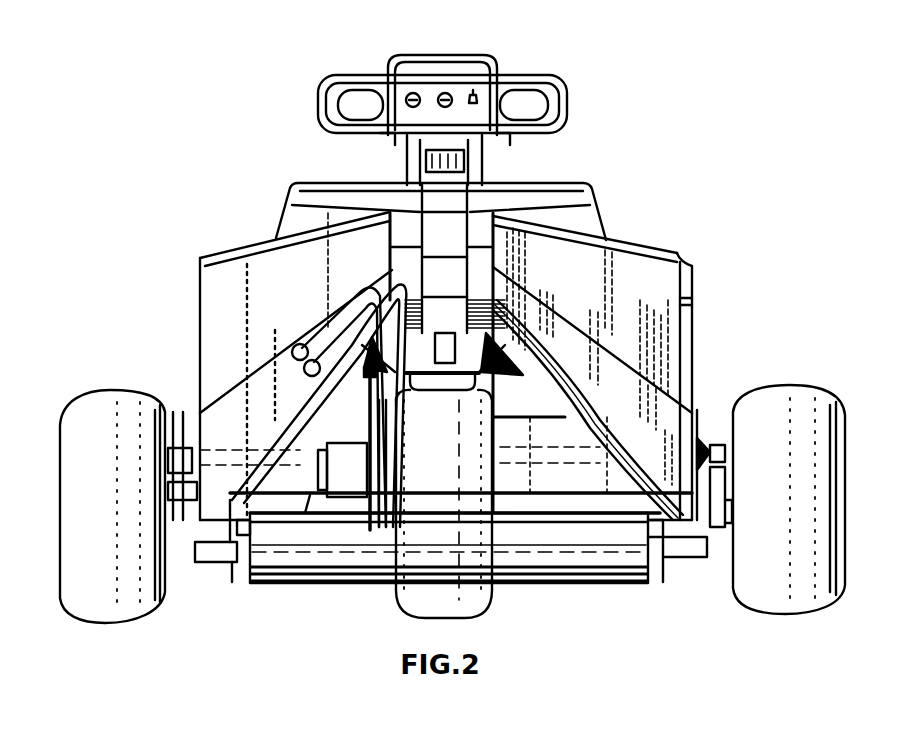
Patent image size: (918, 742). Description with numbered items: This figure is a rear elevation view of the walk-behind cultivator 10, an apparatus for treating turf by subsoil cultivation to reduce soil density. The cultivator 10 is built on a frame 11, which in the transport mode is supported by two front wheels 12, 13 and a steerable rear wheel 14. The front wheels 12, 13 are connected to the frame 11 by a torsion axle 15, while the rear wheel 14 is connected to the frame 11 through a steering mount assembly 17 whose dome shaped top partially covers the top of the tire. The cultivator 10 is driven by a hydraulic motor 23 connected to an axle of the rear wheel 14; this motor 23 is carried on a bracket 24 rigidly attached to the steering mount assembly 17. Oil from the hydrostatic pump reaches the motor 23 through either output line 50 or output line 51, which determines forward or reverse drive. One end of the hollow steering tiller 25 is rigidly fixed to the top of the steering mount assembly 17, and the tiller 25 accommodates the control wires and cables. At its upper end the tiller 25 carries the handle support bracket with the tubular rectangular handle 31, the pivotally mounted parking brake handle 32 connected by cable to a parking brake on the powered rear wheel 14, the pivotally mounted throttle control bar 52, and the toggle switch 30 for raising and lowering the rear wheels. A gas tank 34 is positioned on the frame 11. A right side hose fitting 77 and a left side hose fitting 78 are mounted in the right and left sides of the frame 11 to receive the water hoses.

The cultivator 10 is at (724, 236).
The frame 11 is at (713, 390).
The front wheel 12 is at (770, 386).
The front wheel 13 is at (112, 388).
The steerable rear wheel 14 is at (490, 598).
The torsion axle 15 is at (647, 440).
The steering mount assembly 17 is at (505, 372).
The hydraulic motor 23 is at (327, 468).
The bracket 24 is at (366, 399).
The steering tiller 25 is at (380, 254).
The toggle switch 30 is at (490, 98).
The rectangular handle 31 is at (567, 107).
The parking brake handle 32 is at (450, 55).
The gas tank 34 is at (490, 192).
The output line 50 is at (318, 332).
The output line 51 is at (410, 418).
The throttle control bar 52 is at (362, 84).
The right side hose fitting 77 is at (727, 484).
The left side hose fitting 78 is at (202, 485).